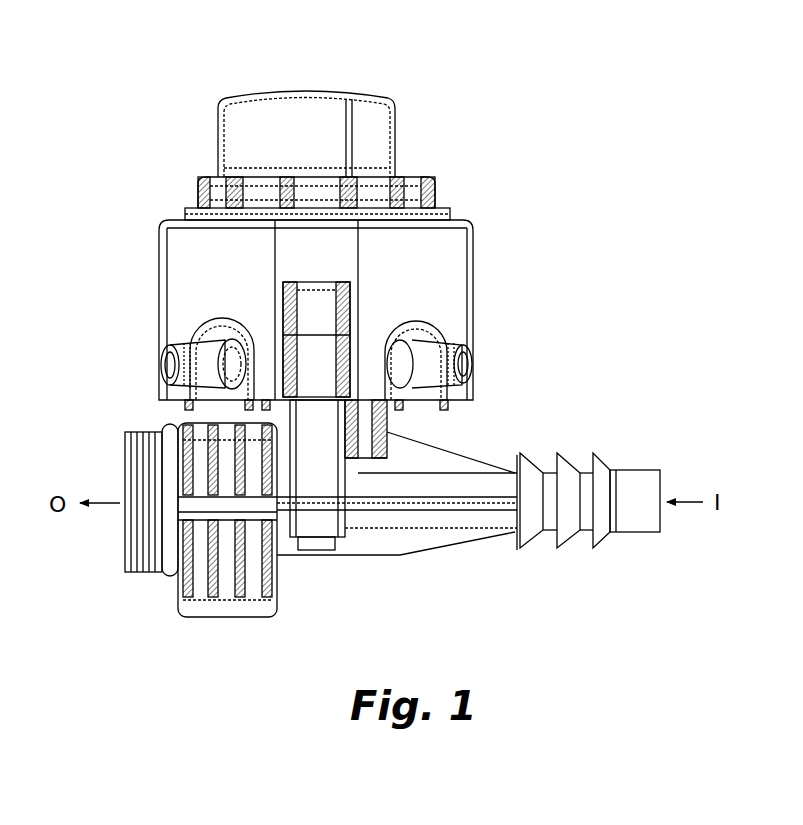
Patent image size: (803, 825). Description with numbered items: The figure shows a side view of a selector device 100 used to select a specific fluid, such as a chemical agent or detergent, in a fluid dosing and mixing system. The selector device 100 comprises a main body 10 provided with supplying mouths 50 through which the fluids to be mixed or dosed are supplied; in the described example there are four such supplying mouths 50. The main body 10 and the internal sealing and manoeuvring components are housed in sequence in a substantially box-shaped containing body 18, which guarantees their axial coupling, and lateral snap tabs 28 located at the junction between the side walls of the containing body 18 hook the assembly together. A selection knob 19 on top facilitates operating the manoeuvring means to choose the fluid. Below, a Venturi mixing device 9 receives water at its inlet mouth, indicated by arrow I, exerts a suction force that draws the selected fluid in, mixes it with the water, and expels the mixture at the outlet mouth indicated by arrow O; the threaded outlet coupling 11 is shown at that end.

The selector device 100 is at (567, 88).
The selection knob 19 is at (308, 117).
The containing body 18 is at (445, 282).
The lateral snap tabs 28 is at (300, 316).
The supplying mouth 50 is at (165, 350).
The main body 10 is at (418, 392).
The coupling 11 is at (297, 442).
The Venturi mixing device 9 is at (443, 547).